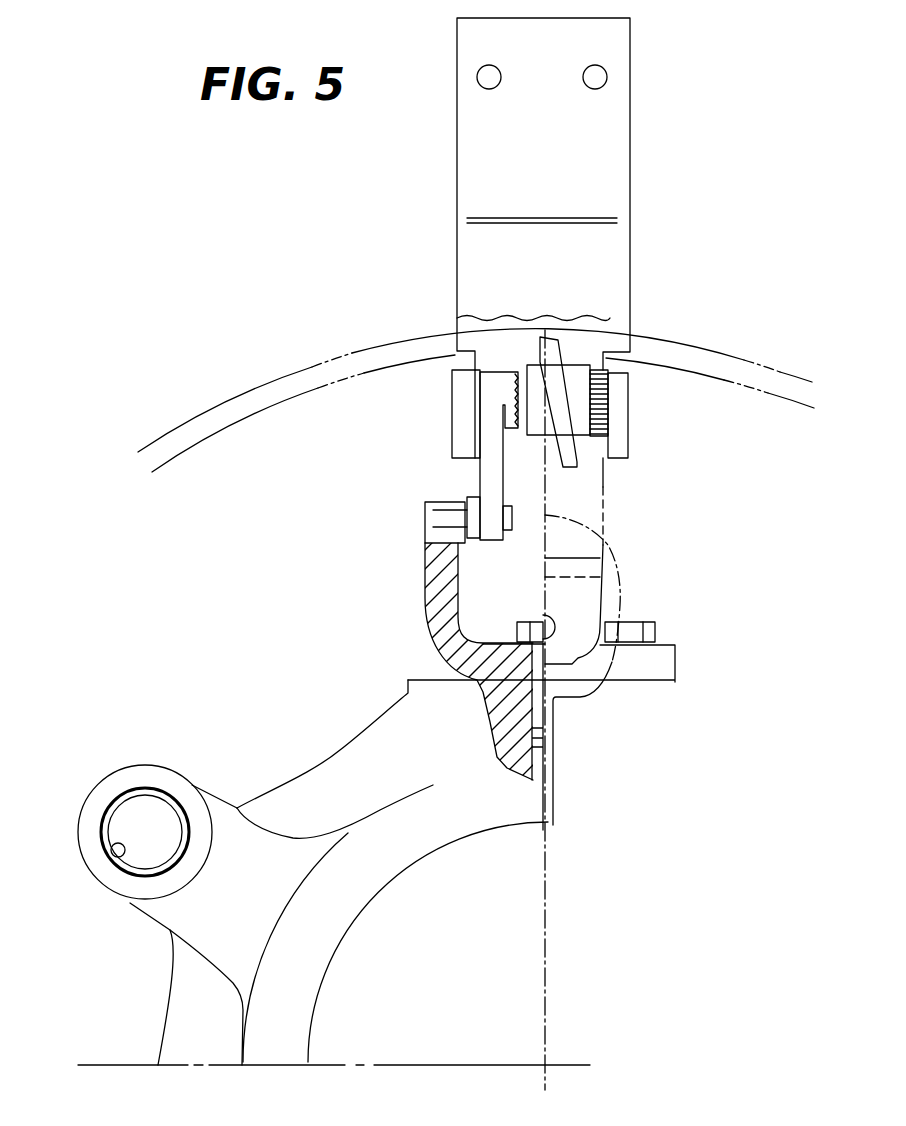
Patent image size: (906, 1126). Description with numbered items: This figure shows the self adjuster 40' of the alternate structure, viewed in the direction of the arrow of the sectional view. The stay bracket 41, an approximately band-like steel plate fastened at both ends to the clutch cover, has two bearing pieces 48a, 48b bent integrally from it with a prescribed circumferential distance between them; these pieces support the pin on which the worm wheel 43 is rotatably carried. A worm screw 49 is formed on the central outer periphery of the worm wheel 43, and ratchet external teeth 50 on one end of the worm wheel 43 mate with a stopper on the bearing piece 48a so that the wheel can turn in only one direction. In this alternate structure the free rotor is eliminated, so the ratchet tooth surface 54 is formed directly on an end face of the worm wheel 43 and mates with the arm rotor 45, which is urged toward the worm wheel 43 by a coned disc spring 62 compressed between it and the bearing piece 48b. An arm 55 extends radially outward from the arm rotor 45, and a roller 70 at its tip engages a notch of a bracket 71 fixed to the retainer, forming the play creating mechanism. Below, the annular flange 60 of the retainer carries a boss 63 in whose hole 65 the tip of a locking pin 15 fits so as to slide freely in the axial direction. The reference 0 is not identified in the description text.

The stay bracket 41 is at (632, 147).
The self adjuster 40' is at (711, 203).
The ratchet tooth surface 54 is at (510, 378).
The arm rotor 45 is at (497, 377).
The worm wheel 43 is at (580, 372).
The coned disc spring 62 is at (462, 407).
The ratchet external teeth 50 is at (601, 405).
The bearing piece 48b is at (465, 437).
The bearing piece 48a is at (620, 443).
The arm 55 is at (490, 477).
The roller 70 is at (437, 520).
The worm screw 49 is at (577, 467).
The bracket 71 is at (432, 601).
The boss 63 is at (125, 773).
The flange 60 is at (340, 750).
The pin 15 is at (127, 828).
The hole 65 is at (122, 858).
The reference point 0 is at (556, 1063).